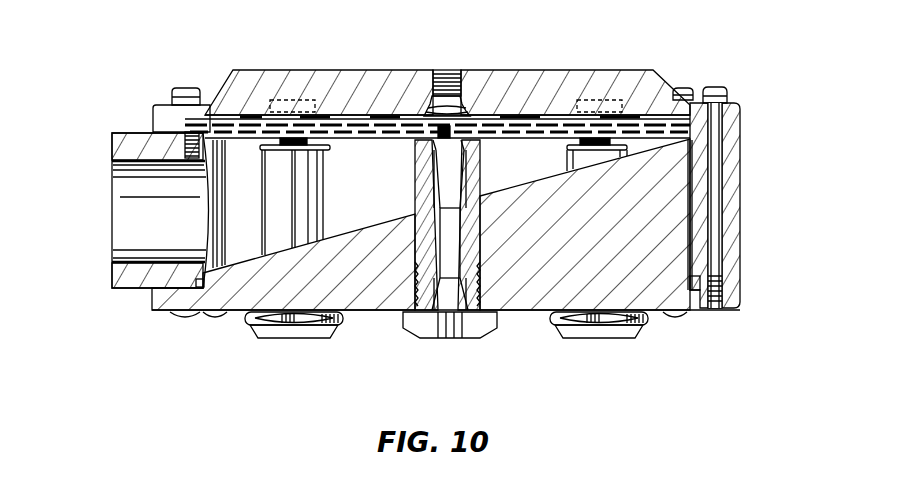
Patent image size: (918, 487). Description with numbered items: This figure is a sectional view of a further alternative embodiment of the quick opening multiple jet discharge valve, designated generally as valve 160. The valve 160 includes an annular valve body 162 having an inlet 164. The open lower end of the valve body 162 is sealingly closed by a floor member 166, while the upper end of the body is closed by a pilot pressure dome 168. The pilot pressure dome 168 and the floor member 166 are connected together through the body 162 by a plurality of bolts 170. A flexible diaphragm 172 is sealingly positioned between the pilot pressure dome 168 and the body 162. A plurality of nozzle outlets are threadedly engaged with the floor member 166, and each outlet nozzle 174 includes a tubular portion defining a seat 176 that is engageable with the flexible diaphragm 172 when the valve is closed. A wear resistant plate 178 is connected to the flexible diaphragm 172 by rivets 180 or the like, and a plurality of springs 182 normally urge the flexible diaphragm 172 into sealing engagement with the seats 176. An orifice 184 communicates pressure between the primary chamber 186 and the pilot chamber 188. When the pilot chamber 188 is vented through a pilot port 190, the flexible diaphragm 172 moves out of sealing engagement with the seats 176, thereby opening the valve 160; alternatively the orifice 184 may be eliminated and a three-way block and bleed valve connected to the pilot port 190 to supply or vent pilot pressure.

The valve 160 is at (585, 44).
The annular valve body 162 is at (740, 205).
The inlet 164 is at (112, 250).
The floor member 166 is at (240, 315).
The pilot pressure dome 168 is at (288, 70).
The bolts 170 is at (178, 88).
The flexible diaphragm 172 is at (155, 110).
The outlet nozzle 174 is at (465, 338).
The seat 176 is at (478, 118).
The wear resistant plate 178 is at (488, 140).
The rivets 180 is at (290, 150).
The springs 182 is at (430, 92).
The orifice 184 is at (183, 190).
The primary chamber 186 is at (400, 312).
The pilot chamber 188 is at (680, 88).
The pilot port 190 is at (448, 72).